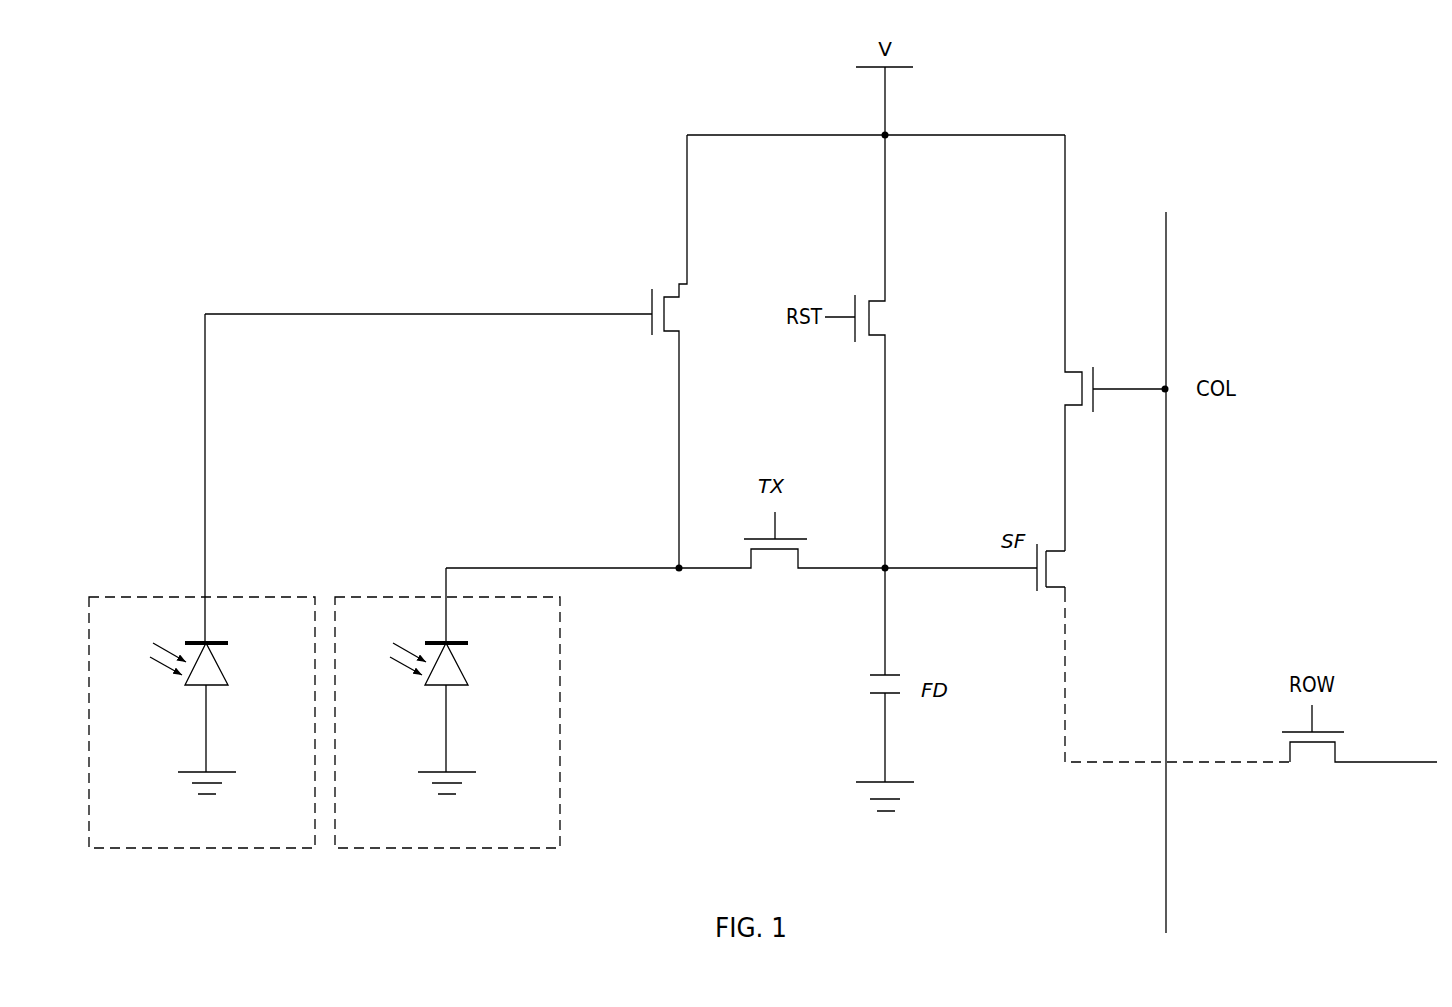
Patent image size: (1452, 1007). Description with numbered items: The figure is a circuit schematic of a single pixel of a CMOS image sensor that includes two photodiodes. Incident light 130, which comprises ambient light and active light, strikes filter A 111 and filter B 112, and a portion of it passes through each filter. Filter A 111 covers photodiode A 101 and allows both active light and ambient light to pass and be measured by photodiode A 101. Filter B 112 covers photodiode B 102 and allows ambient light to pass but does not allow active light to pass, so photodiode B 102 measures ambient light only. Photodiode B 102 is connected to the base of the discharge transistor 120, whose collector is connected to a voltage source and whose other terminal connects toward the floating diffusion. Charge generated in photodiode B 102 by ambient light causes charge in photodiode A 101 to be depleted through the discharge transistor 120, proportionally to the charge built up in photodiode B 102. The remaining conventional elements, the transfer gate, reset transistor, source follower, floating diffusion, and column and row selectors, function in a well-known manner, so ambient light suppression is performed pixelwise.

The photodiode A 101 is at (464, 668).
The photodiode B 102 is at (224, 668).
The filter A 111 is at (392, 596).
The filter B 112 is at (157, 596).
The transistor DISCHARGE 120 is at (652, 297).
The light 130 is at (165, 678).